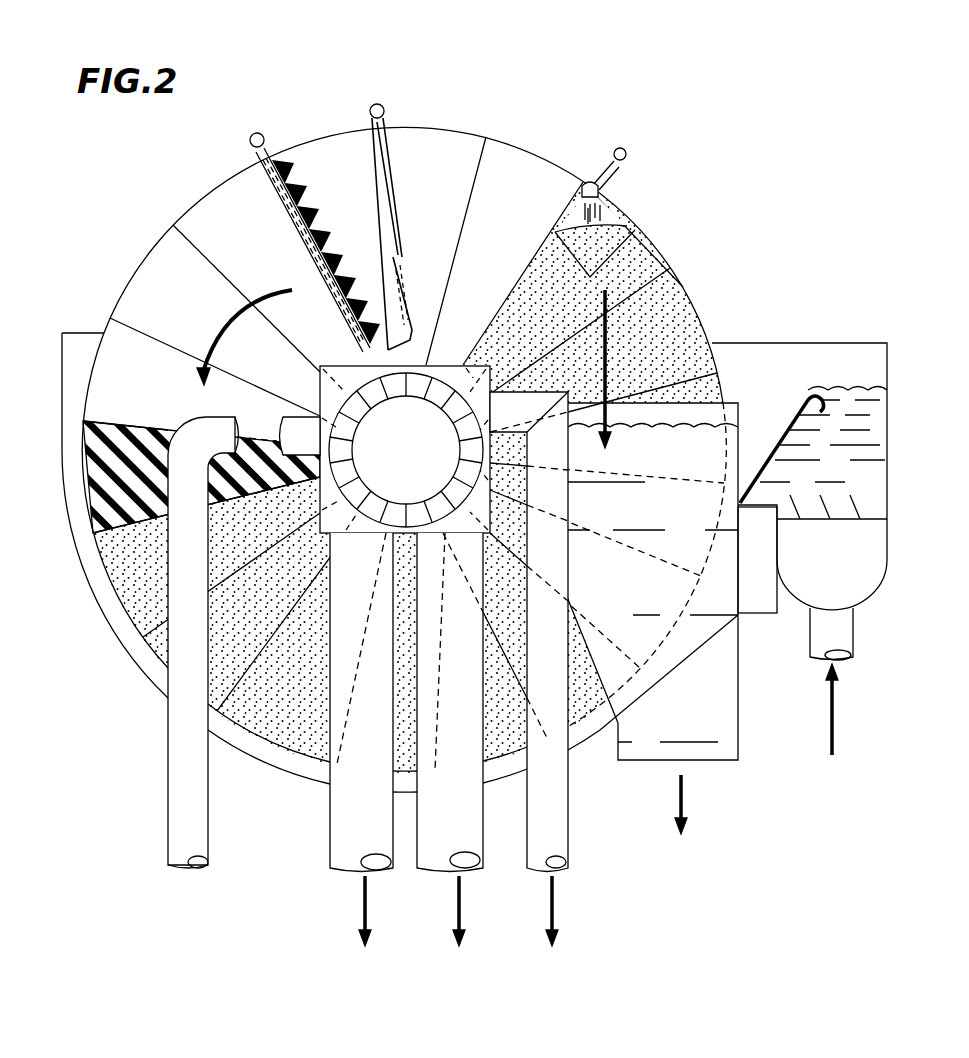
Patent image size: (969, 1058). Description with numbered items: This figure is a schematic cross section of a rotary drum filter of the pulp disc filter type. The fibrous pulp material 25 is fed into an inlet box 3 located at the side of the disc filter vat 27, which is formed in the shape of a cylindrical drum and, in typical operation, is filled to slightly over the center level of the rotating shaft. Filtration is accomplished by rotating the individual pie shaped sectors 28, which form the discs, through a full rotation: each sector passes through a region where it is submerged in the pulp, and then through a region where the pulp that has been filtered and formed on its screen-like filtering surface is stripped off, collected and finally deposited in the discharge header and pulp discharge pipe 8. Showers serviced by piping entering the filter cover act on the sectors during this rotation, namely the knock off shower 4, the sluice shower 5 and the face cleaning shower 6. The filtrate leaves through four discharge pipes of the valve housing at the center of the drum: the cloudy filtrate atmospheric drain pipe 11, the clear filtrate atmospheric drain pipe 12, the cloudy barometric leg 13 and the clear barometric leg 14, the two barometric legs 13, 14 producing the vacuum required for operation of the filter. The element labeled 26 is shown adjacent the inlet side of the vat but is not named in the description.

The inlet box 3 is at (888, 482).
The knock off shower 4 is at (624, 150).
The sluice shower 5 is at (378, 104).
The face cleaning shower 6 is at (260, 133).
The pulp discharge pipe 8 is at (723, 760).
The cloudy filtrate atmospheric drain pipe 11 is at (210, 830).
The clear filtrate atmospheric drain pipe 12 is at (568, 843).
The cloudy barometric leg 13 is at (330, 848).
The clear barometric leg 14 is at (483, 838).
The fibrous pulp material 25 is at (838, 722).
The liquid tank 26 is at (832, 343).
The disc filter vat 27 is at (694, 305).
The pie shaped sectors 28 is at (512, 158).